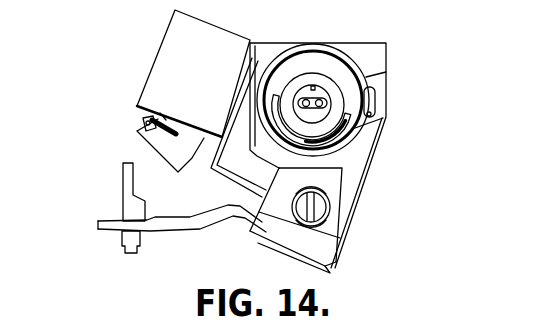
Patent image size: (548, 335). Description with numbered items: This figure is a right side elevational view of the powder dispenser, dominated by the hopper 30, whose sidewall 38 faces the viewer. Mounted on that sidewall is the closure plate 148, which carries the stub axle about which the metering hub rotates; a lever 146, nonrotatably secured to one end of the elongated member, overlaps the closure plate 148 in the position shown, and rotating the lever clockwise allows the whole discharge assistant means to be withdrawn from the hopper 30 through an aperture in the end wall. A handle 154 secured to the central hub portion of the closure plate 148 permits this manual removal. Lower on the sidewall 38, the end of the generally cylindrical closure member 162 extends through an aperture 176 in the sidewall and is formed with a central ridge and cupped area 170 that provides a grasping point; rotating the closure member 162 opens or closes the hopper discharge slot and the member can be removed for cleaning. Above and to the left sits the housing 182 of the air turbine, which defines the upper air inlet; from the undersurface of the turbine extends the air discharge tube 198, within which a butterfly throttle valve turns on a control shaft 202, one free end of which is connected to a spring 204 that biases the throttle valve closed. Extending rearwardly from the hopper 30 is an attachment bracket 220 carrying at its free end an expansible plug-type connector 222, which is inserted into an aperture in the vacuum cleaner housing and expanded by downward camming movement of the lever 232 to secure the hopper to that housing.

The hopper 30 is at (388, 58).
The sidewall 38 is at (358, 157).
The lever 146 is at (373, 100).
The closure plate 148 is at (317, 64).
The handle 154 is at (278, 92).
The closure member 162 is at (318, 208).
The central ridge and cupped area 170 is at (322, 221).
The aperture 176 is at (322, 194).
The housing 182 is at (163, 42).
The air discharge tube 198 is at (182, 143).
The control shaft 202 is at (177, 124).
The spring 204 is at (146, 118).
The attachment bracket 220 is at (178, 232).
The expansible plug-type connector 222 is at (120, 235).
The lever 232 is at (121, 183).